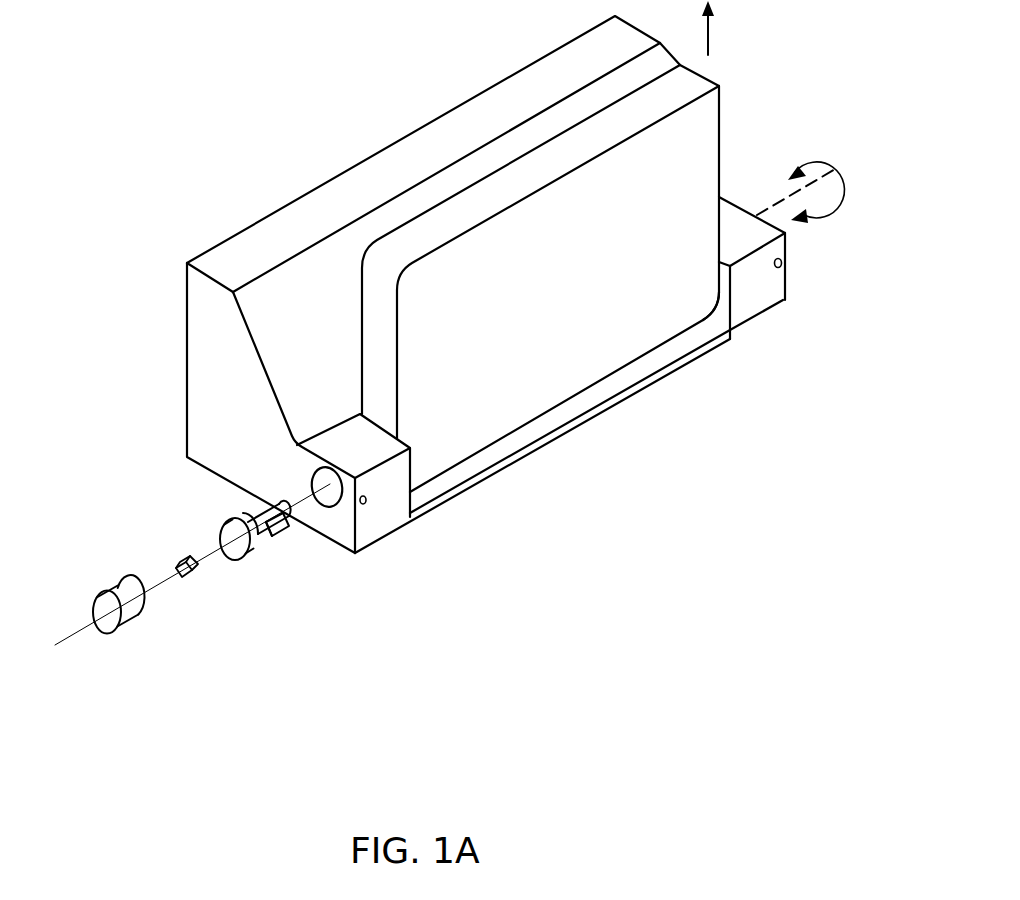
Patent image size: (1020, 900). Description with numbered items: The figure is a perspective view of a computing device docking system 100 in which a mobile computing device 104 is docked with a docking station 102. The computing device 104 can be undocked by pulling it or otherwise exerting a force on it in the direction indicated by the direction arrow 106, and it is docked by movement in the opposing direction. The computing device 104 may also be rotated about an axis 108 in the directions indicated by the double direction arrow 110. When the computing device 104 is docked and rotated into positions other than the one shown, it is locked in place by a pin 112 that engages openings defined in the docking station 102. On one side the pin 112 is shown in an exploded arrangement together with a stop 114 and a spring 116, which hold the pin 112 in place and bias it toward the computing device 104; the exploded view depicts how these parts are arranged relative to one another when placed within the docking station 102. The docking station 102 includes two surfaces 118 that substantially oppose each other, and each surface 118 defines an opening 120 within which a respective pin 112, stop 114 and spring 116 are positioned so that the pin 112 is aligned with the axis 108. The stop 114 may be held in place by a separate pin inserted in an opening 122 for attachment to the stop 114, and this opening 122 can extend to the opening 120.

The computing device docking system 100 is at (147, 136).
The docking station 102 is at (189, 260).
The mobile computing device 104 is at (721, 87).
The direction arrow 106 is at (711, 20).
The axis 108 is at (762, 208).
The double direction arrow 110 is at (816, 160).
The pin 112 is at (278, 534).
The stop 114 is at (132, 618).
The spring 116 is at (185, 577).
The surface 118 is at (720, 308).
The opening 120 is at (327, 484).
The opening 122 is at (364, 505).